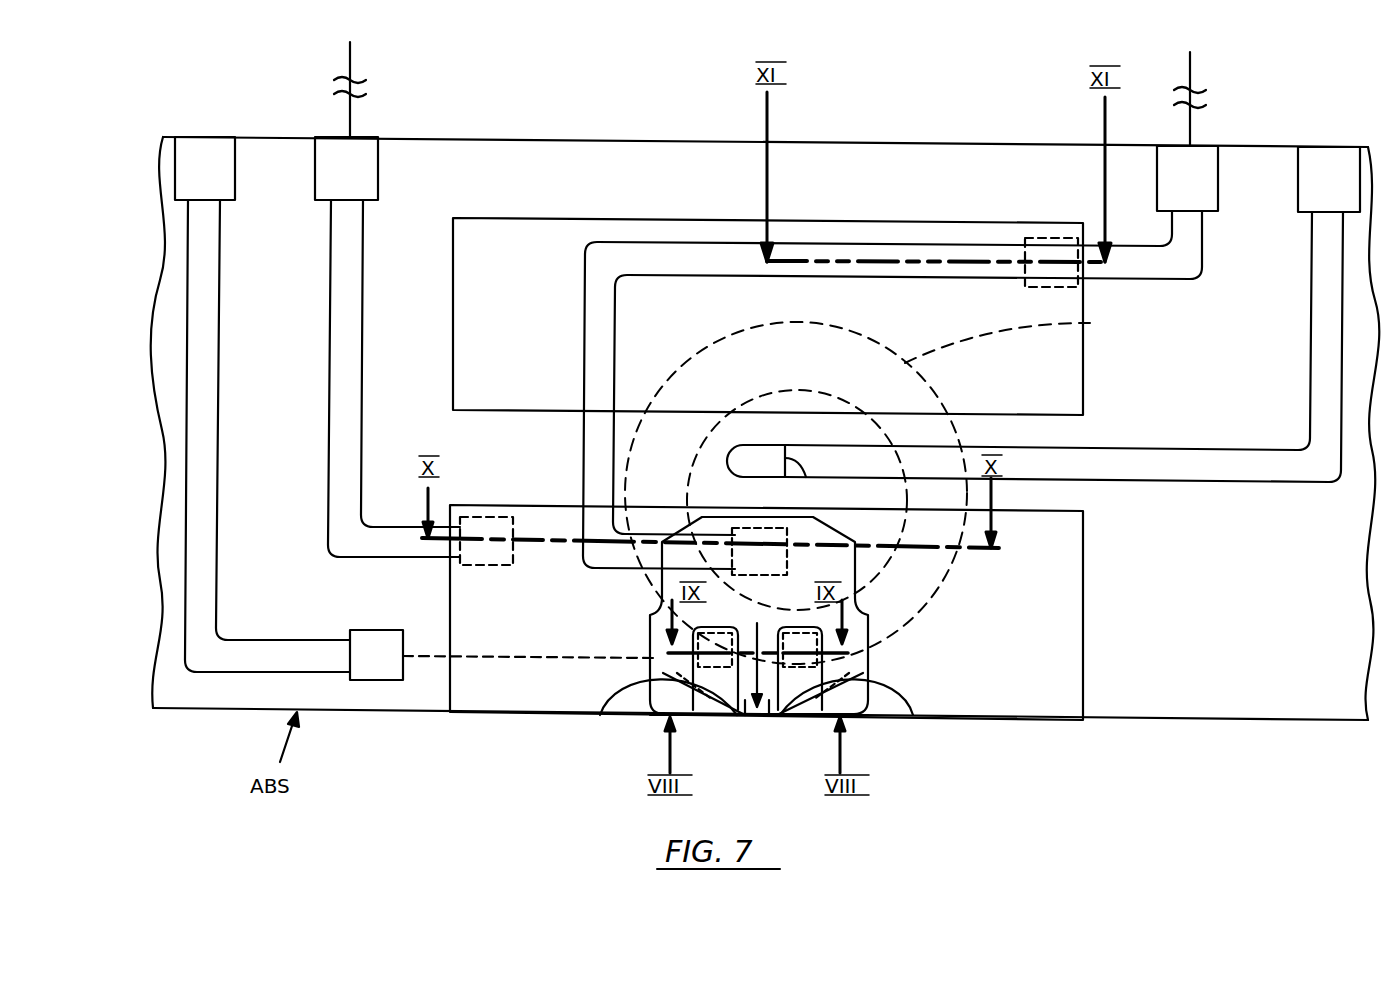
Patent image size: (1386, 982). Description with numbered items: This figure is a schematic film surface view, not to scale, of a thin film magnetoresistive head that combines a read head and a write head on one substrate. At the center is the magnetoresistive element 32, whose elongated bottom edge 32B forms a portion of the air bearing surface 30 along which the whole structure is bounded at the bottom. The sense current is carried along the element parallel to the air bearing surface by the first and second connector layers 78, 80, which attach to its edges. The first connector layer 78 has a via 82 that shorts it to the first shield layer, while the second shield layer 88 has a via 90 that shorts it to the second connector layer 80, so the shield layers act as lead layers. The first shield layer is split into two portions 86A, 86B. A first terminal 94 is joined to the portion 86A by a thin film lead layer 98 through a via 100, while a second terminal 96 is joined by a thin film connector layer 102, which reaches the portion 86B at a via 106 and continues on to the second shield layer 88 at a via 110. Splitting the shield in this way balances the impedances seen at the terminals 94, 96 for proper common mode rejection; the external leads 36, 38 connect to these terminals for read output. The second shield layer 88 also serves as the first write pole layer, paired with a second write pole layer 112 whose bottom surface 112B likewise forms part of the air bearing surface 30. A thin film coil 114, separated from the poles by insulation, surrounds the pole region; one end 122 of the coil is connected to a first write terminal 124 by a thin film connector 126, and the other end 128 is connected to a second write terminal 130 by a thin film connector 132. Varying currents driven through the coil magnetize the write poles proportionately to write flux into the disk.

The air bearing surface 30 is at (1178, 720).
The magnetoresistive element 32 is at (759, 616).
The elongated bottom edge 32B is at (740, 720).
The lead 36 is at (353, 57).
The lead 38 is at (1195, 66).
The first connector layer 78 is at (647, 717).
The second connector layer 80 is at (873, 720).
The via 82 is at (663, 677).
The first shield layer portion 86A is at (482, 682).
The first shield layer portion 86B is at (477, 230).
The second shield layer 88 is at (867, 680).
The via 90 is at (850, 677).
The first terminal 94 is at (367, 137).
The second terminal 96 is at (1207, 147).
The thin film lead layer 98 is at (337, 377).
The via 100 is at (478, 530).
The thin film connector layer 102 is at (658, 262).
The via 106 is at (1048, 250).
The via 110 is at (793, 556).
The second write pole layer 112 is at (803, 612).
The bottom surface 112B is at (760, 717).
The thin film coil 114 is at (1090, 325).
The coil end 122 is at (373, 667).
The first write terminal 124 is at (198, 137).
The thin film connector 126 is at (200, 410).
The coil end 128 is at (758, 463).
The second write terminal 130 is at (1327, 150).
The thin film connector 132 is at (1159, 457).